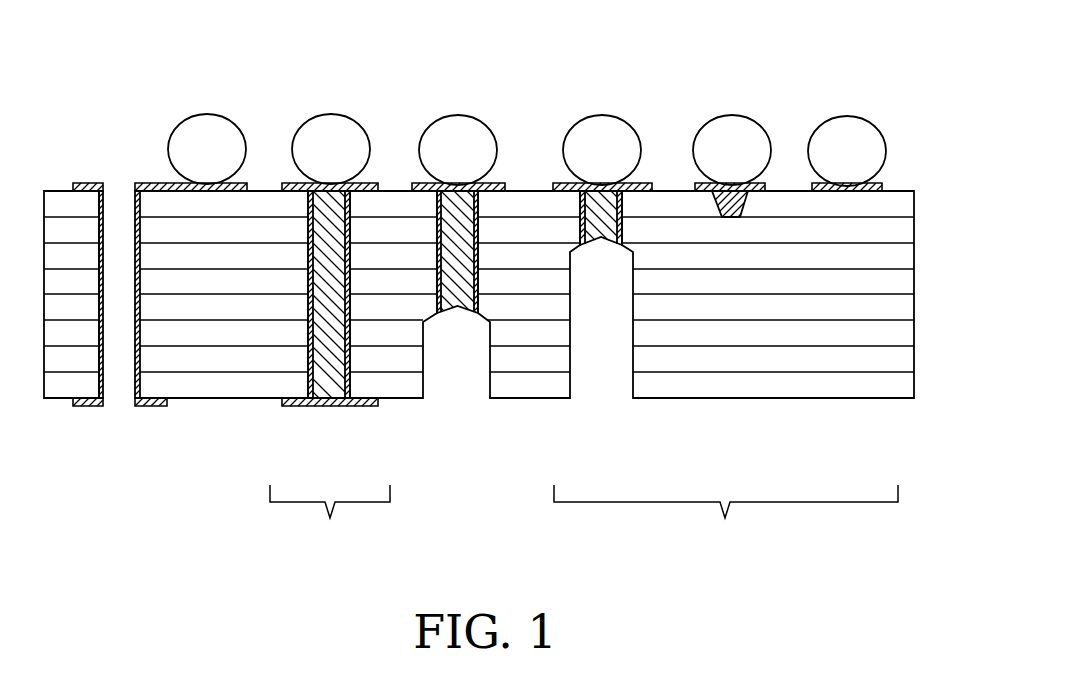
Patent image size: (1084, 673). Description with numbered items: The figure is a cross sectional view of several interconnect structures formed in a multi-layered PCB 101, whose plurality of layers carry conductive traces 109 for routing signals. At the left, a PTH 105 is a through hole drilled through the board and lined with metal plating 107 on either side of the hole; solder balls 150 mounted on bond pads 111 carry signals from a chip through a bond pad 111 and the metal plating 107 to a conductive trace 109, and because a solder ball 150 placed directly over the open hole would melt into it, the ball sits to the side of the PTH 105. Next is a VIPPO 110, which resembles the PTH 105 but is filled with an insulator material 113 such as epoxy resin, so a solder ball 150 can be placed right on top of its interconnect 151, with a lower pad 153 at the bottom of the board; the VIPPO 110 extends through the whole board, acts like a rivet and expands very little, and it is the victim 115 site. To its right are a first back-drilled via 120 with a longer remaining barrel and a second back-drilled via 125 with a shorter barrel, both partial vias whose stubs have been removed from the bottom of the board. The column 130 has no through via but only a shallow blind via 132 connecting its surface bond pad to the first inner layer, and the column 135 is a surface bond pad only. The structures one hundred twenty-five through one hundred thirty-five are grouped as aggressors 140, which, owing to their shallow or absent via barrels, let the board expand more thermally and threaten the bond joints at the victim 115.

The multi-layered PCB 101 is at (914, 282).
The PTH 105 is at (91, 311).
The metal plating 107 is at (105, 242).
The conductive traces 109 is at (265, 215).
The VIPPO 110 is at (328, 315).
The bond pad 111 is at (155, 183).
The insulator material 113 is at (325, 353).
The victim 115 is at (330, 516).
The first back-drilled via 120 is at (458, 277).
The second back-drilled via 125 is at (602, 277).
The column with blind via 130 is at (732, 277).
The blind via 132 is at (712, 208).
The surface bond pad 135 is at (847, 277).
The aggressors 140 is at (726, 516).
The solder balls 150 is at (212, 137).
The interconnect 151 is at (374, 183).
The bottom pad 153 is at (370, 408).